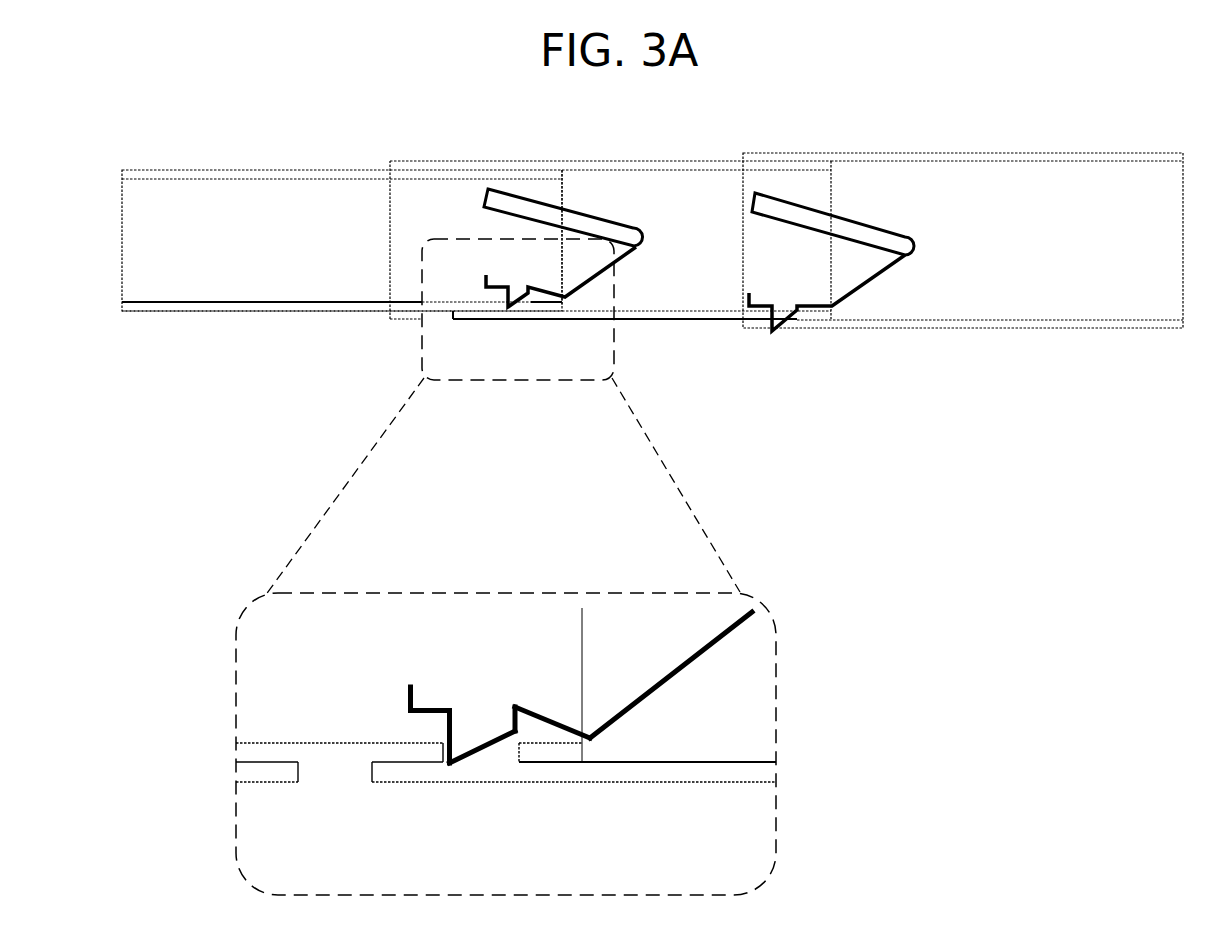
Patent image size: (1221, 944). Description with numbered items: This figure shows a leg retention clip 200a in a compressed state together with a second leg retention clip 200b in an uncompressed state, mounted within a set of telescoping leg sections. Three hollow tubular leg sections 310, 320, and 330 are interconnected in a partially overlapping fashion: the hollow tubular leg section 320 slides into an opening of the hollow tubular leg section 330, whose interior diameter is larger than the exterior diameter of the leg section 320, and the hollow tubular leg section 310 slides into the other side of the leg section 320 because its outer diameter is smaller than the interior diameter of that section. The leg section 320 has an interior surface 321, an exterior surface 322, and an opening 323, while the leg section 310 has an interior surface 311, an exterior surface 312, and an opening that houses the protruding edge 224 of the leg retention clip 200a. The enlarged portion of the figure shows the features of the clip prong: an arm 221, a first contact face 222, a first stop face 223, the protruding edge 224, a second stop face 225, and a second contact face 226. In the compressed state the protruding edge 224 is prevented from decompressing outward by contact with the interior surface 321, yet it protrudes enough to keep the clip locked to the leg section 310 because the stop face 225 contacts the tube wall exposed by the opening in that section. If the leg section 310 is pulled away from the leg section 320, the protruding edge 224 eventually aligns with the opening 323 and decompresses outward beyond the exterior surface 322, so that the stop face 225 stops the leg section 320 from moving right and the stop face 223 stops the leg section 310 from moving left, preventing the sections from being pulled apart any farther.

The hollow tubular leg section 310 is at (358, 211).
The hollow tubular leg section 320 is at (713, 197).
The hollow tubular leg section 330 is at (1023, 189).
The leg retention clip 200a is at (567, 222).
The leg retention clip 200b is at (837, 223).
The interior surface 311 is at (237, 302).
The exterior surface 312 is at (218, 312).
The interior surface 321 is at (650, 308).
The exterior surface 322 is at (663, 320).
The opening 323 is at (438, 318).
The arm 221 is at (673, 672).
The first contact face 222 is at (573, 723).
The first stop face 223 is at (507, 722).
The protruding edge 224 is at (482, 750).
The second stop face 225 is at (478, 705).
The second contact face 226 is at (443, 690).